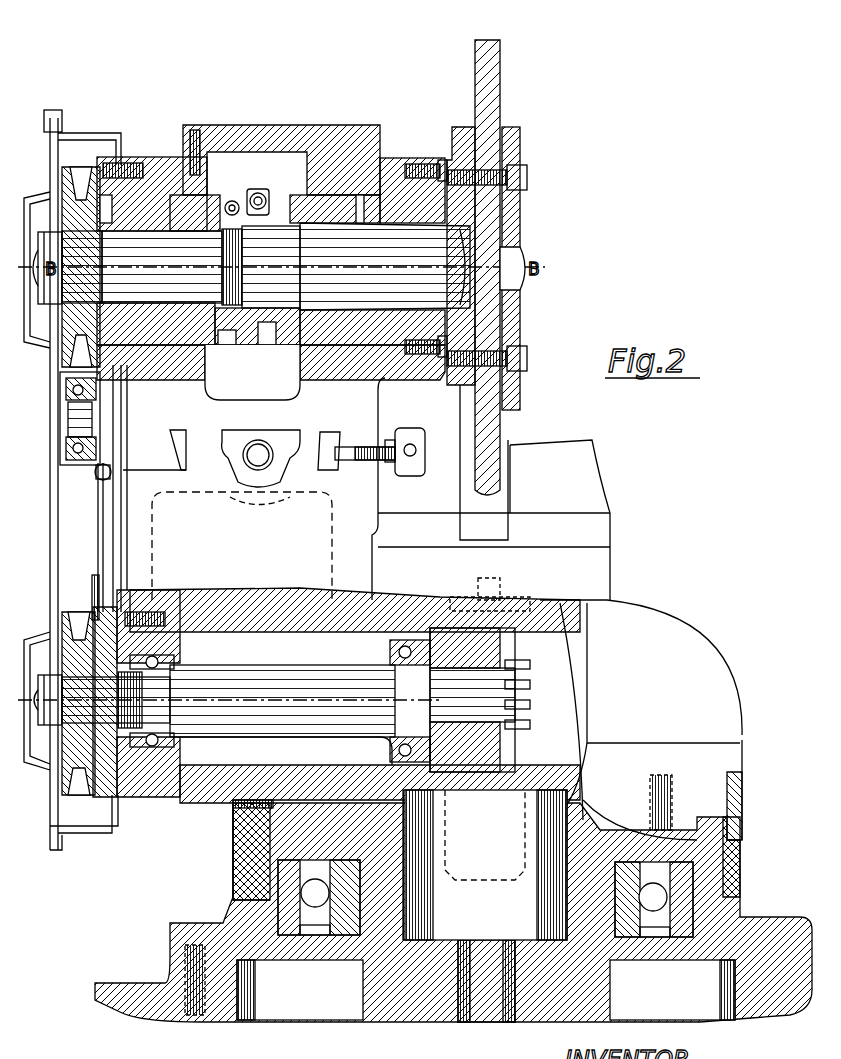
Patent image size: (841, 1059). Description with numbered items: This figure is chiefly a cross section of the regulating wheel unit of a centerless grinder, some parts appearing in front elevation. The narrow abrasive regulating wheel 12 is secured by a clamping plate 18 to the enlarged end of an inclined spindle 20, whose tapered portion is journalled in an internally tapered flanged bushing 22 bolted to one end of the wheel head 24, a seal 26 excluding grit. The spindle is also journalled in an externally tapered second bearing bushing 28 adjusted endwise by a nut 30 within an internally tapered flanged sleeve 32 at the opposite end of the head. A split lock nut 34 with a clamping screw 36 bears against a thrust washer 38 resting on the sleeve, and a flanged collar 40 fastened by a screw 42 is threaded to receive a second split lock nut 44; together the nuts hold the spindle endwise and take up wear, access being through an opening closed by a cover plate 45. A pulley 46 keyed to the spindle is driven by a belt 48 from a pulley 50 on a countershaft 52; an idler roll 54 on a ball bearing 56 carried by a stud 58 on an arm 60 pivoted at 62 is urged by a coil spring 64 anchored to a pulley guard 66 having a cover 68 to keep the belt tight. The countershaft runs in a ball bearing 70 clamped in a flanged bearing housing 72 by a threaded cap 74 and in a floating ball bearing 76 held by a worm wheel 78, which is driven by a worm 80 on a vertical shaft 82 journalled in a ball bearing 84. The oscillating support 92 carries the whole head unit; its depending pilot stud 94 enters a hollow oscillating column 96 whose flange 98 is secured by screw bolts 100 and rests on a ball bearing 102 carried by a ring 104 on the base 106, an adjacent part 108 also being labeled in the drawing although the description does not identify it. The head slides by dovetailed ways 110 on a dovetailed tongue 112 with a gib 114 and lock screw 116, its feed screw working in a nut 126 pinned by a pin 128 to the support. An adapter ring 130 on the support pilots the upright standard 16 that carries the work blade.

The abrasive regulating wheel 12 is at (497, 80).
The upright standard 16 is at (555, 499).
The clamping plate 18 is at (520, 340).
The spindle 20 is at (415, 259).
The internally tapered flanged bushing 22 is at (335, 232).
The wheel head 24 is at (385, 165).
The seal 26 is at (500, 215).
The second bearing bushing 28 is at (198, 232).
The nut 30 is at (112, 232).
The internally tapered flanged sleeve 32 is at (150, 175).
The split lock nut 34 is at (232, 348).
The clamping screw 36 is at (234, 201).
The thrust washer 38 is at (214, 195).
The flanged collar 40 is at (266, 348).
The screw 42 is at (283, 200).
The split lock nut 44 is at (260, 190).
The cover plate 45 is at (303, 128).
The pulley 46 is at (70, 345).
The belt 48 is at (80, 172).
The pulley 50 is at (62, 632).
The countershaft 52 is at (256, 701).
The idler roll 54 is at (70, 465).
The ball bearing 56 is at (72, 392).
The stud 58 is at (75, 415).
The arm 60 is at (98, 516).
The pivot 62 is at (93, 582).
The coil spring 64 is at (96, 476).
The pulley guard 66 is at (100, 135).
The cover 68 is at (52, 376).
The ball bearing 70 is at (160, 665).
The flanged bearing housing 72 is at (180, 622).
The threaded cap 74 is at (105, 655).
The ball bearing 76 is at (390, 653).
The worm wheel 78 is at (515, 650).
The worm 80 is at (540, 672).
The vertical shaft 82 is at (495, 584).
The ball bearing 84 is at (583, 630).
The oscillating support 92 is at (279, 538).
The pilot stud 94 is at (455, 888).
The hollow oscillating column 96 is at (392, 1022).
The flange 98 is at (262, 840).
The screw bolts 100 is at (650, 824).
The ball bearing 102 is at (312, 960).
The ring 104 is at (270, 962).
The base 106 is at (210, 1020).
The wall 108 is at (233, 878).
The dovetailed ways 110 is at (162, 460).
The dovetailed tongue 112 is at (212, 455).
The gib 114 is at (345, 445).
The lock screw 116 is at (425, 452).
The nut 126 is at (285, 432).
The pin 128 is at (225, 430).
The adapter ring 130 is at (598, 570).